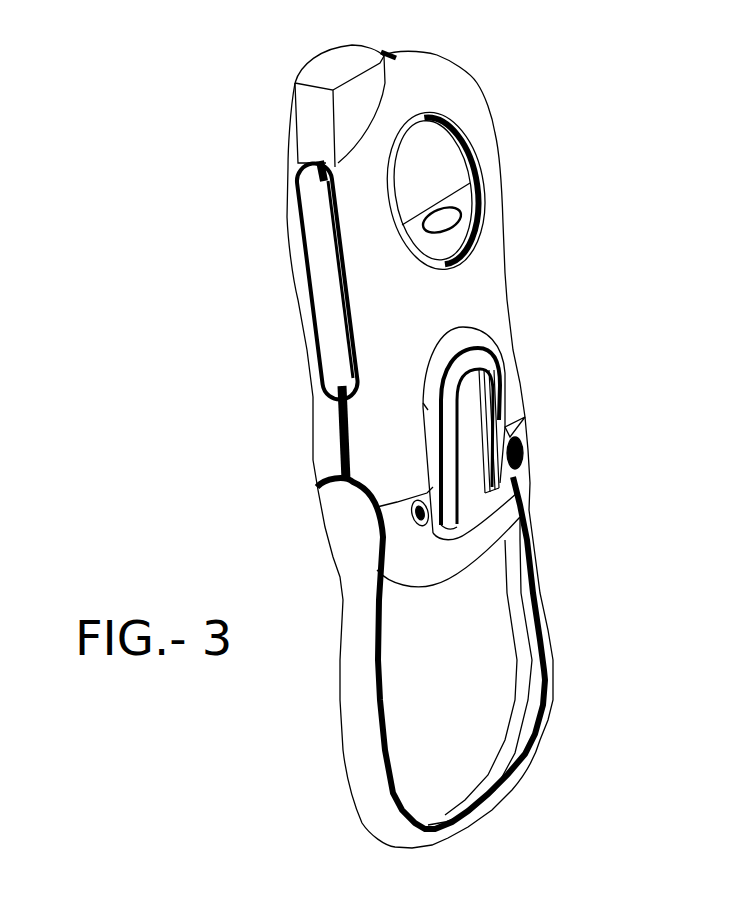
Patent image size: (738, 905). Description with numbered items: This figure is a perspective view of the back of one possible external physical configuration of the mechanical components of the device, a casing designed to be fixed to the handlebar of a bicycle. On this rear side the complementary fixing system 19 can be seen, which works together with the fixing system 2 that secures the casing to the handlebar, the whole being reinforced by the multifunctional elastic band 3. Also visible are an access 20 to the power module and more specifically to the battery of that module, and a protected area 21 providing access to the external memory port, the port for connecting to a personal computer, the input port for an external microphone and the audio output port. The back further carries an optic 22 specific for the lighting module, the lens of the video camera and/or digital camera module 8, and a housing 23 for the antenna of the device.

The fixing system 2 is at (512, 280).
The multifunctional elastic band 3 is at (538, 680).
The video camera and/or digital camera module 8 is at (447, 222).
The fixing system 19 is at (472, 437).
The access 20 is at (430, 550).
The protected area 21 is at (322, 263).
The optic 22 is at (432, 172).
The housing 23 is at (310, 112).